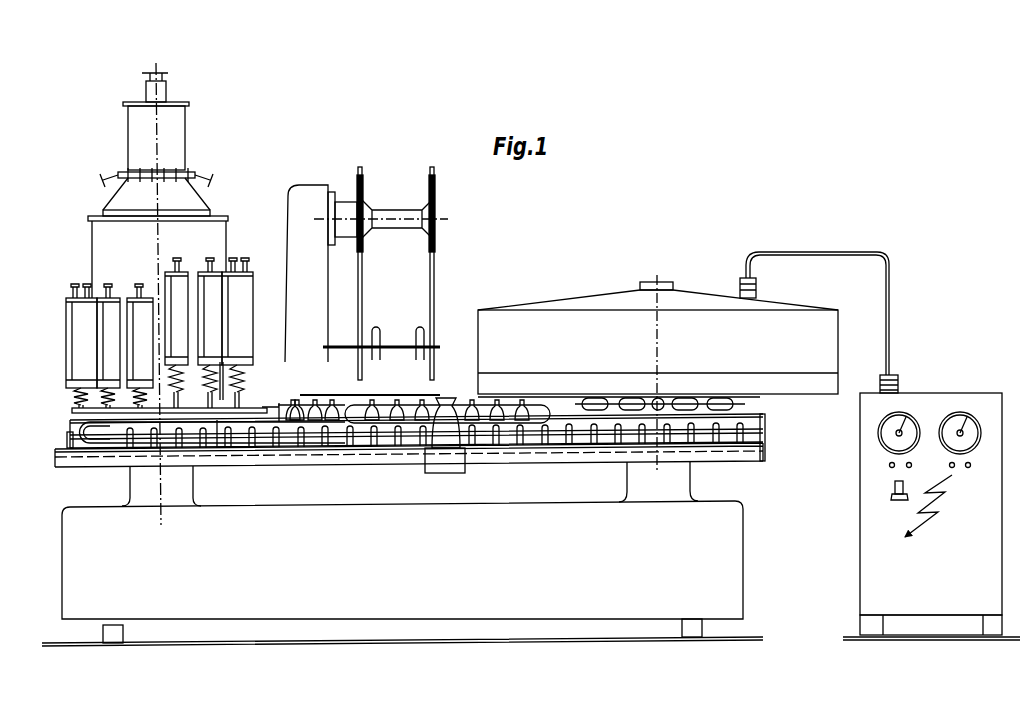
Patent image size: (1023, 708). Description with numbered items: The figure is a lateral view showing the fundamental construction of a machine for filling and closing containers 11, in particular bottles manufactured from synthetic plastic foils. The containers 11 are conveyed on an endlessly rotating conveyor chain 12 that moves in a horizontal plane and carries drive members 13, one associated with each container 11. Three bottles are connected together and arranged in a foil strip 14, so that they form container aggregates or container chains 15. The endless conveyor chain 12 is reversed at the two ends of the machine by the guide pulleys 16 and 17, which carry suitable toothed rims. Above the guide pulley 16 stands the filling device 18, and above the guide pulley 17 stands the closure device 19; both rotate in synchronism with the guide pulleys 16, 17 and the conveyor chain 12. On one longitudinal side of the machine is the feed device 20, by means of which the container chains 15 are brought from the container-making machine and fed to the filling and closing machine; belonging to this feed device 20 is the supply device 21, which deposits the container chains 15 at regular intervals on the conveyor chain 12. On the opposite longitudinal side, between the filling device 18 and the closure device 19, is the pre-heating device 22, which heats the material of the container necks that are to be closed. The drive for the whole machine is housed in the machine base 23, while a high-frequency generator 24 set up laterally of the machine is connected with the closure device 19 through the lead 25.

The container 11 is at (329, 405).
The conveyor chain 12 is at (63, 445).
The drive members 13 is at (108, 433).
The foil strip 14 is at (278, 403).
The container chain 15 is at (294, 400).
The guide pulley 16 is at (110, 452).
The guide pulley 17 is at (710, 448).
The filling device 18 is at (235, 302).
The closure device 19 is at (751, 375).
The feed device 20 is at (440, 282).
The supply device 21 is at (378, 352).
The pre-heating device 22 is at (457, 403).
The machine base 23 is at (100, 553).
The high-frequency generator 24 is at (885, 537).
The lead 25 is at (893, 270).